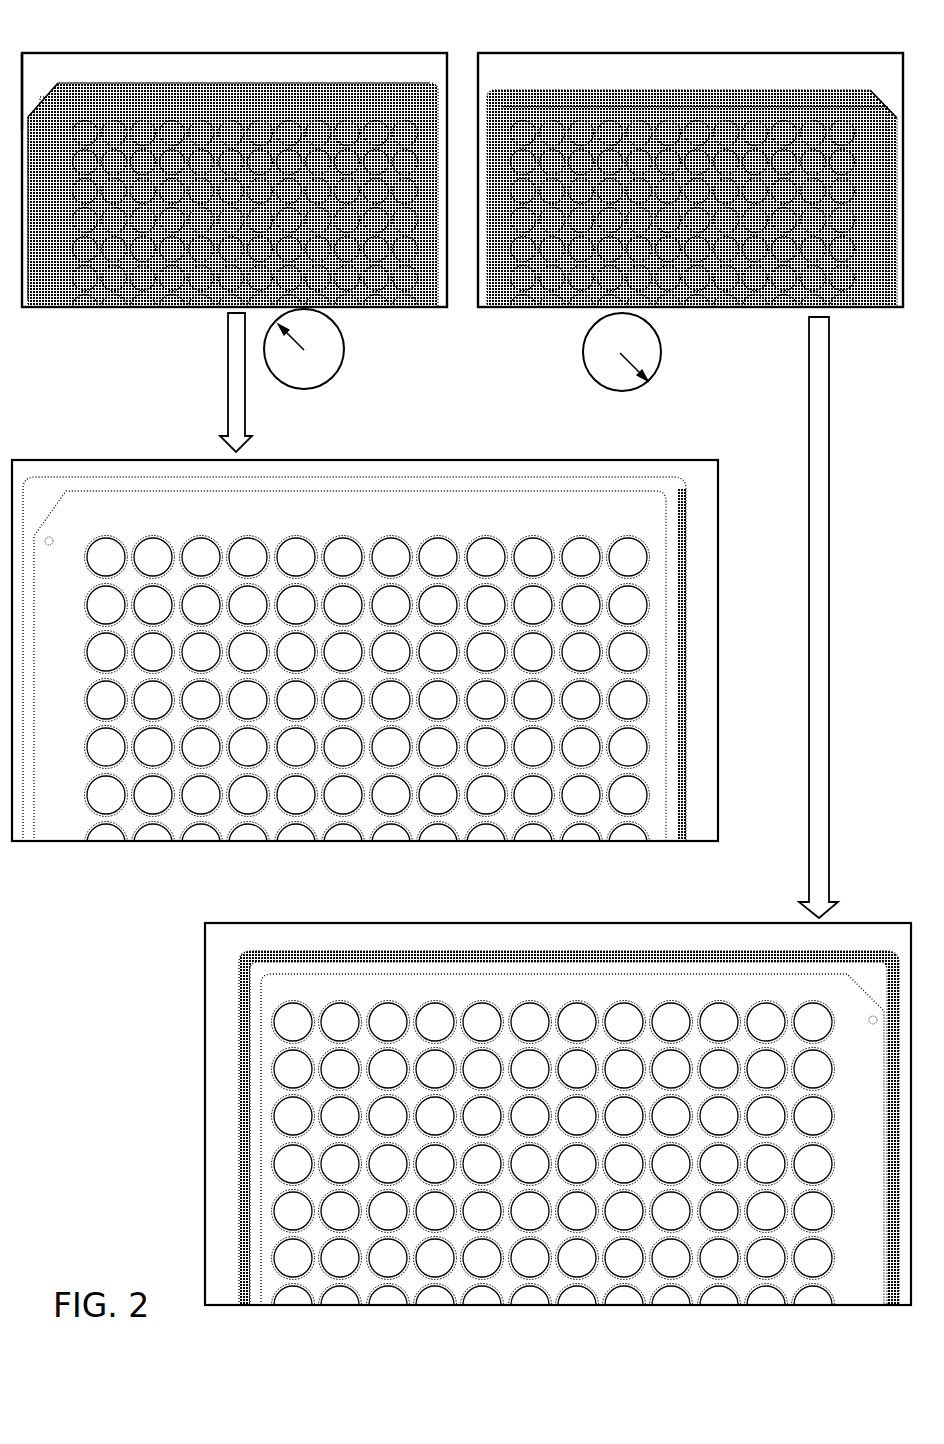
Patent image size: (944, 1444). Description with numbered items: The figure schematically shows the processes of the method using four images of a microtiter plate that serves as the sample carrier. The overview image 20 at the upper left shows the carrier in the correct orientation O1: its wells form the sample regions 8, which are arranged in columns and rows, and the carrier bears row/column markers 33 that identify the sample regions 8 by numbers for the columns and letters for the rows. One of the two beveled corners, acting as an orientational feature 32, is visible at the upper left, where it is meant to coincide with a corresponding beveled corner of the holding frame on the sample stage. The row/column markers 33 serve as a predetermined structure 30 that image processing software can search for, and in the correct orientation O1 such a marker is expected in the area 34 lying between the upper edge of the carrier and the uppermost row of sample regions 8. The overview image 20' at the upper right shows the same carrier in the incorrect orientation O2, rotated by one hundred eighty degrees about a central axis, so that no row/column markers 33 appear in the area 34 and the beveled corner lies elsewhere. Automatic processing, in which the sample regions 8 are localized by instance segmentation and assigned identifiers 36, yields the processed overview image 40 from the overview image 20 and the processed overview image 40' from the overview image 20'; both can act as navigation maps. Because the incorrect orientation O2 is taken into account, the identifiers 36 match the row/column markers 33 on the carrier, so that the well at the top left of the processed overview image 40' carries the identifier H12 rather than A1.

The overview image 20 is at (246, 157).
The overview image 20' is at (690, 155).
The predetermined structure 30 is at (33, 95).
The orientational feature 32 is at (55, 100).
The row/column marker 33 is at (168, 102).
The area 34 is at (240, 100).
The sample region 8 is at (171, 277).
The correct orientation O1 is at (343, 333).
The incorrect orientation O2 is at (583, 362).
The processed overview image 40 is at (365, 623).
The processed overview image 40' is at (503, 1114).
The identifier 36 is at (113, 548).